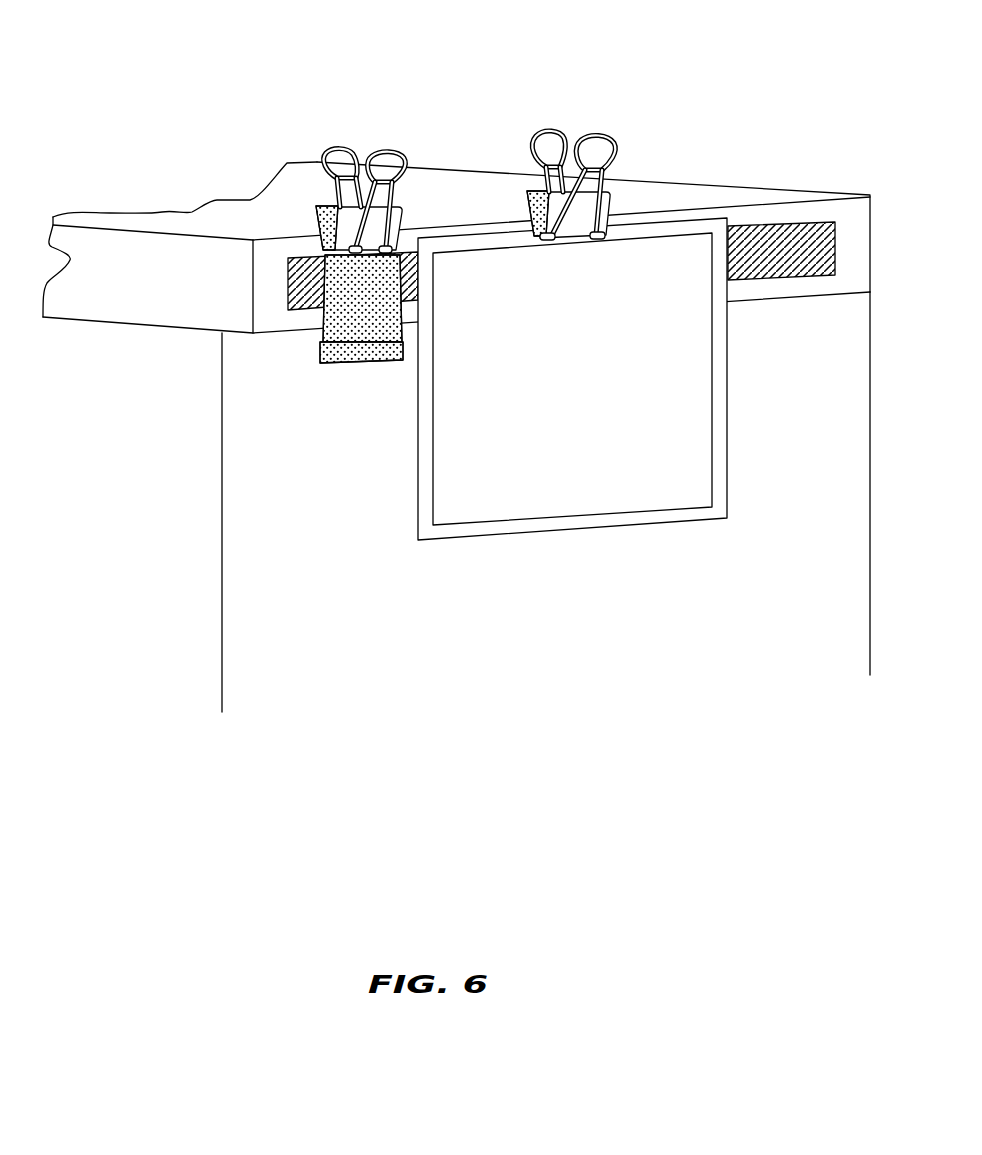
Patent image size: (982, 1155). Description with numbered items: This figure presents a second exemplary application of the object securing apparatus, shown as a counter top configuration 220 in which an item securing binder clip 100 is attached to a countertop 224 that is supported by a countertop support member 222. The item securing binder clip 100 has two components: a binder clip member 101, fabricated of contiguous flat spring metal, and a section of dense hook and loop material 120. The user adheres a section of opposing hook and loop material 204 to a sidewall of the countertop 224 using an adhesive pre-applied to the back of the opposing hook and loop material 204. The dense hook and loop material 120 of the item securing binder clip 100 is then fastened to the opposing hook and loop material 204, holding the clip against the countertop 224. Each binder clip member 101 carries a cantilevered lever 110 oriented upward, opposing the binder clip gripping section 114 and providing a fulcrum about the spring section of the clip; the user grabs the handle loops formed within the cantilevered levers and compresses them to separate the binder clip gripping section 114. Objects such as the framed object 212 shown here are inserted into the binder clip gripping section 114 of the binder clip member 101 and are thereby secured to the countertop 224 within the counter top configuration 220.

The item securing binder clip 100 is at (472, 181).
The binder clip member 101 is at (318, 227).
The cantilevered lever 110 is at (620, 148).
The binder clip gripping section 114 is at (410, 252).
The hook and loop material 120 is at (365, 333).
The opposing hook and loop material 204 is at (760, 268).
The framed object 212 is at (600, 523).
The counter top configuration 220 is at (456, 356).
The countertop support member 222 is at (568, 625).
The countertop 224 is at (218, 308).